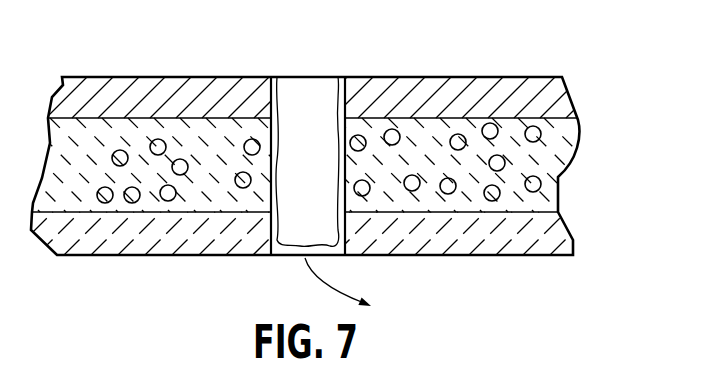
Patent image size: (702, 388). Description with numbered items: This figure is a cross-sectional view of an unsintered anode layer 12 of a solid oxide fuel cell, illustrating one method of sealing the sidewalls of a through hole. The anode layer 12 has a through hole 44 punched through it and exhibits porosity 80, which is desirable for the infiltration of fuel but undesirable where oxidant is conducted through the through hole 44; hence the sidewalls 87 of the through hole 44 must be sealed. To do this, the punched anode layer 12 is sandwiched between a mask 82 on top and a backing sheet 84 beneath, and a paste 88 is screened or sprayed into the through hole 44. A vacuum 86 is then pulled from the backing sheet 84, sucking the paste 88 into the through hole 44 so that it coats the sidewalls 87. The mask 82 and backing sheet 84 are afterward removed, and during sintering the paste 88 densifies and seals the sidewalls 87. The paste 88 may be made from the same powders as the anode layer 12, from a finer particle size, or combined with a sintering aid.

The anode layer 12 is at (558, 177).
The through hole 44 is at (324, 137).
The porosity 80 is at (541, 134).
The mask 82 is at (182, 85).
The backing sheet 84 is at (173, 246).
The vacuum 86 is at (465, 313).
The sidewalls 87 is at (350, 92).
The paste 88 is at (340, 186).